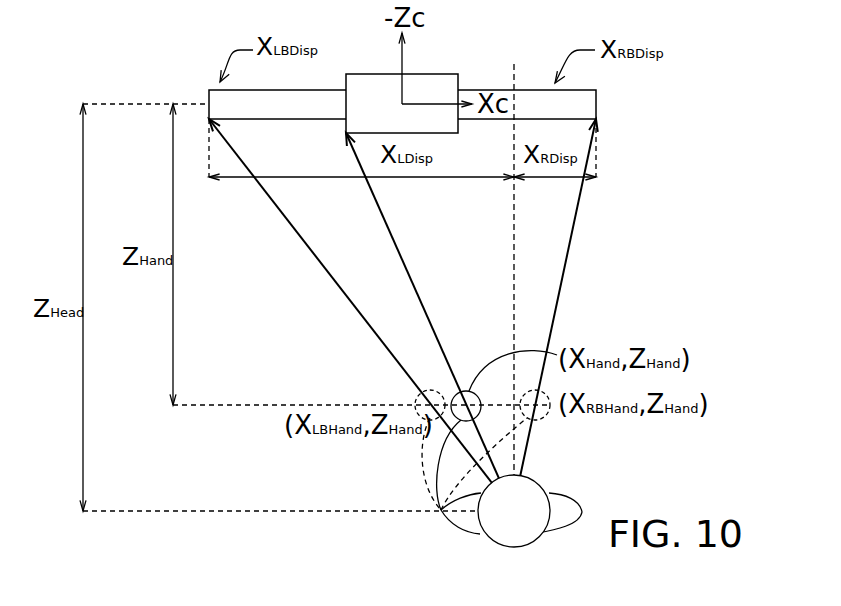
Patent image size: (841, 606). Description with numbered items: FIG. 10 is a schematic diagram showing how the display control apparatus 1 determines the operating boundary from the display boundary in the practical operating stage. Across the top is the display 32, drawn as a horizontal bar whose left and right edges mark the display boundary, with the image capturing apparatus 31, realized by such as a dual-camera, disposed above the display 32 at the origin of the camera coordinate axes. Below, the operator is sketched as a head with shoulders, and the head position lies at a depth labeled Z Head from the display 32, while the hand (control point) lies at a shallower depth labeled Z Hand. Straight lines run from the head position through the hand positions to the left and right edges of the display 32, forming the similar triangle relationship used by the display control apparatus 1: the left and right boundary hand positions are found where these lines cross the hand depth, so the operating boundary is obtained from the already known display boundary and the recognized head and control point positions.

The image capturing apparatus 31 is at (430, 74).
The display 32 is at (330, 90).
The display control apparatus 1 is at (502, 468).